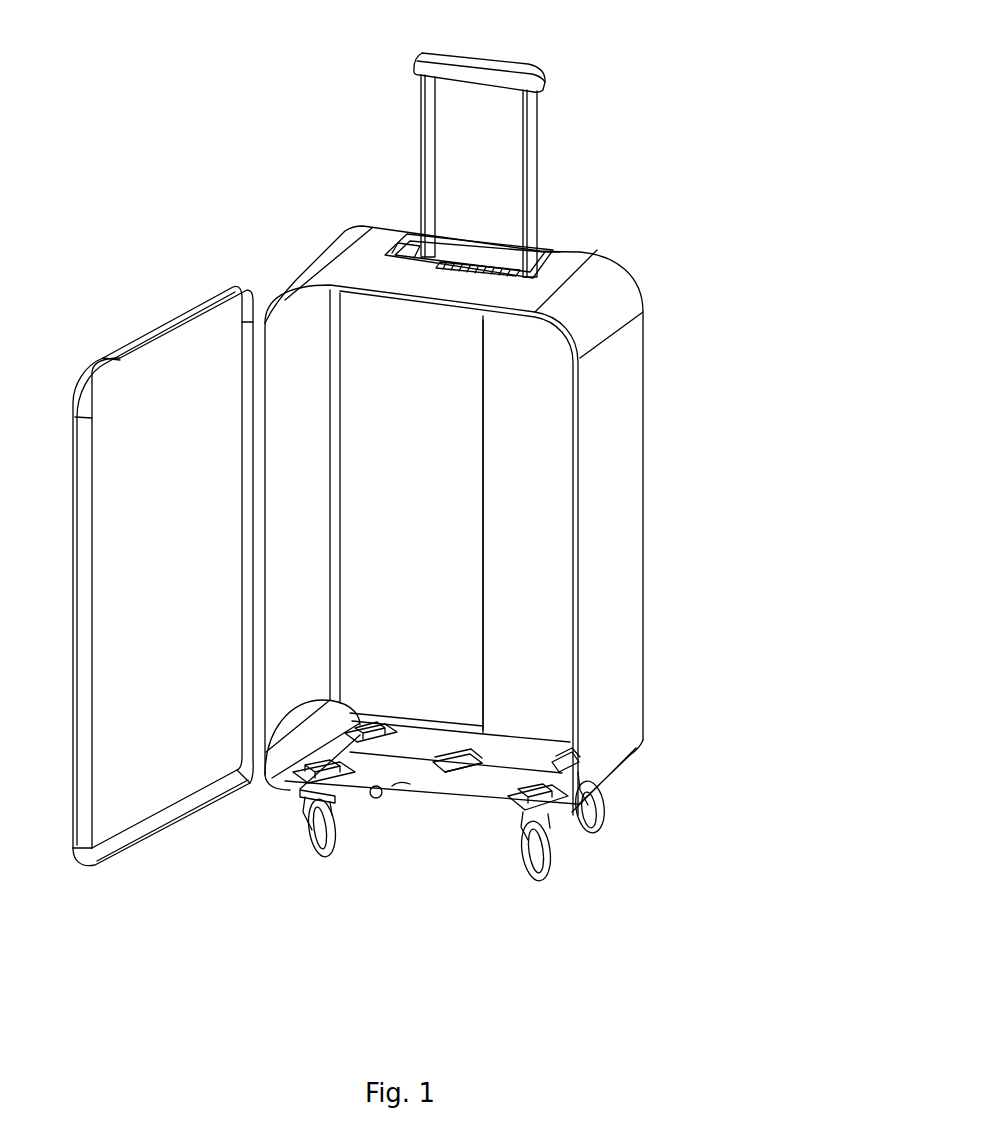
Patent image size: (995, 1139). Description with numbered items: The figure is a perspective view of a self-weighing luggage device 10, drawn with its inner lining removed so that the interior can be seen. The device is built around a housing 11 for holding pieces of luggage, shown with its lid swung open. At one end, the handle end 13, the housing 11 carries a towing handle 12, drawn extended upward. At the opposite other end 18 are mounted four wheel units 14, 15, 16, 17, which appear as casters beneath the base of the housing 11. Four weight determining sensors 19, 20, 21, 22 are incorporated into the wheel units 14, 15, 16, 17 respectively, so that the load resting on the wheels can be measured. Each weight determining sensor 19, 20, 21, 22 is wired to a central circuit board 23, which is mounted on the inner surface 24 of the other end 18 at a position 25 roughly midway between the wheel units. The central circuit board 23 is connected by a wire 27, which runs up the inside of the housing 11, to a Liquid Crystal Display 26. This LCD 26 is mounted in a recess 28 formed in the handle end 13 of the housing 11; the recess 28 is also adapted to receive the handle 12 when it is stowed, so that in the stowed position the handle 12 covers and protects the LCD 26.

The self-weighing luggage device 10 is at (190, 153).
The housing 11 is at (628, 375).
The towing handle 12 is at (520, 77).
The handle end 13 is at (577, 258).
The wheel unit 14 is at (308, 813).
The wheel unit 15 is at (360, 790).
The wheel unit 16 is at (543, 883).
The wheel unit 17 is at (593, 833).
The other end 18 is at (478, 797).
The weight determining sensor 19 is at (285, 768).
The weight determining sensor 20 is at (272, 762).
The weight determining sensor 21 is at (572, 778).
The weight determining sensor 22 is at (585, 750).
The central circuit board 23 is at (437, 773).
The inner surface 24 is at (403, 787).
The position 25 is at (450, 777).
The Liquid Crystal Display (LCD) 26 is at (424, 232).
The wire 27 is at (485, 460).
The recess 28 is at (538, 257).